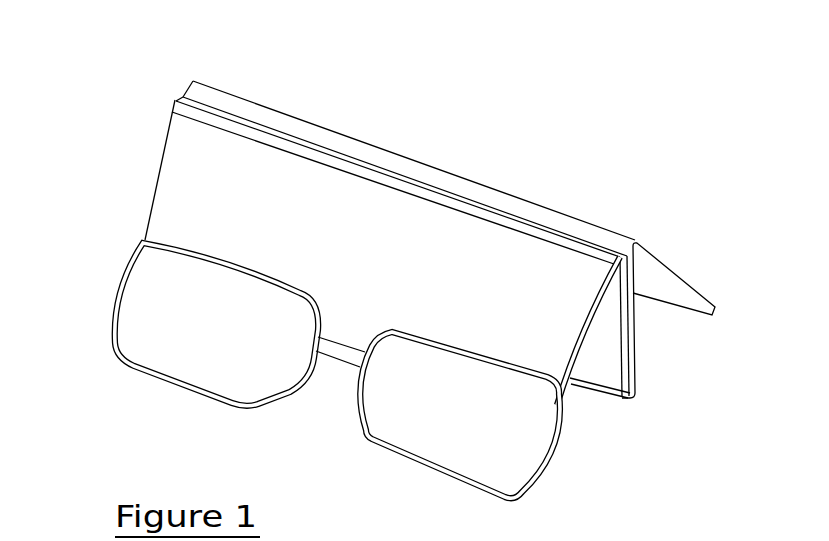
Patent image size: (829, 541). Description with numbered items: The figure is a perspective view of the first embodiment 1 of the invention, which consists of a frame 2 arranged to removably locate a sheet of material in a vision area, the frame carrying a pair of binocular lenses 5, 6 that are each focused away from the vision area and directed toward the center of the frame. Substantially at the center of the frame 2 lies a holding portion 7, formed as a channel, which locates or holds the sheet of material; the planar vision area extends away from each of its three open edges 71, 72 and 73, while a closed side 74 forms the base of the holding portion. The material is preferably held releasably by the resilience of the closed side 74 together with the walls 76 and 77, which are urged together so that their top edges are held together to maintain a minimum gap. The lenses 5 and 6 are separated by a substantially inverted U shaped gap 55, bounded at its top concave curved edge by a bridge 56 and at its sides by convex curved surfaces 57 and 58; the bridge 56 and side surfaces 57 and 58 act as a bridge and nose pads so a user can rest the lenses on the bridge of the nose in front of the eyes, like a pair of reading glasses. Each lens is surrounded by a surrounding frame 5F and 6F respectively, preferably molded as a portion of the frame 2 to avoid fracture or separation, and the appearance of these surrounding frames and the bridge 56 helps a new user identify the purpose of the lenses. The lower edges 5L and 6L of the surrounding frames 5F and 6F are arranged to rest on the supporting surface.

The first embodiment 1 is at (80, 72).
The frame 2 is at (160, 184).
The lens 5 is at (214, 342).
The surrounding frame 5F is at (142, 240).
The lower edge 5L is at (182, 388).
The lens 6 is at (463, 427).
The surrounding frame 6F is at (551, 460).
The lower edge 6L is at (460, 490).
The holding portion 7 is at (465, 200).
The inverted U shaped gap 55 is at (317, 410).
The bridge 56 is at (342, 345).
The convex curved surface 57 is at (300, 393).
The convex curved surface 58 is at (357, 420).
The open edge 71 is at (160, 106).
The open edge 72 is at (338, 150).
The open edge 73 is at (627, 336).
The closed side 74 is at (590, 386).
The wall 76 is at (614, 362).
The wall 77 is at (636, 311).